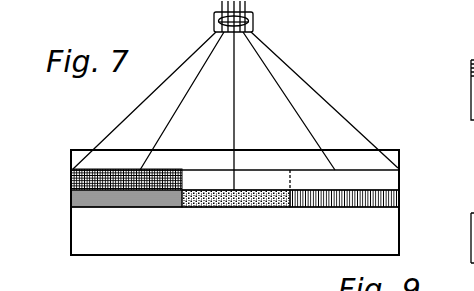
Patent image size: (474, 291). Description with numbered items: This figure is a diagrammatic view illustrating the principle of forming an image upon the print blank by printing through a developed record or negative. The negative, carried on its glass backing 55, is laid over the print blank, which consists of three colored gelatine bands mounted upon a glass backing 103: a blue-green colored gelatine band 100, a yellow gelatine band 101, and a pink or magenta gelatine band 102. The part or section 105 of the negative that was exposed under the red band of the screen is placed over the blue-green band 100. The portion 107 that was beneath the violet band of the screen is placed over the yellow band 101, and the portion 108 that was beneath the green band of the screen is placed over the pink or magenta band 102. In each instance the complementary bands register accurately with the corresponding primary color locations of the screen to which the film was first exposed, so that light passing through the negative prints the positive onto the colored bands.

The glass backing 55 is at (402, 157).
The blue-green colored gelatine band 100 is at (71, 208).
The yellow gelatine band 101 is at (248, 208).
The pink or magenta gelatine band 102 is at (340, 208).
The glass backing 103 is at (146, 256).
The part or section 105 is at (72, 172).
The portion 107 is at (275, 149).
The portion 108 is at (328, 181).